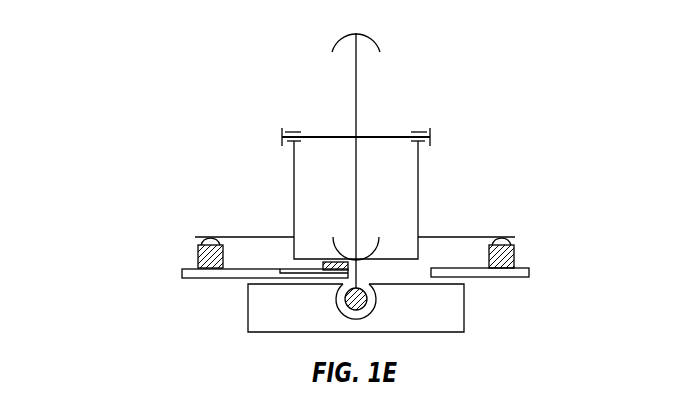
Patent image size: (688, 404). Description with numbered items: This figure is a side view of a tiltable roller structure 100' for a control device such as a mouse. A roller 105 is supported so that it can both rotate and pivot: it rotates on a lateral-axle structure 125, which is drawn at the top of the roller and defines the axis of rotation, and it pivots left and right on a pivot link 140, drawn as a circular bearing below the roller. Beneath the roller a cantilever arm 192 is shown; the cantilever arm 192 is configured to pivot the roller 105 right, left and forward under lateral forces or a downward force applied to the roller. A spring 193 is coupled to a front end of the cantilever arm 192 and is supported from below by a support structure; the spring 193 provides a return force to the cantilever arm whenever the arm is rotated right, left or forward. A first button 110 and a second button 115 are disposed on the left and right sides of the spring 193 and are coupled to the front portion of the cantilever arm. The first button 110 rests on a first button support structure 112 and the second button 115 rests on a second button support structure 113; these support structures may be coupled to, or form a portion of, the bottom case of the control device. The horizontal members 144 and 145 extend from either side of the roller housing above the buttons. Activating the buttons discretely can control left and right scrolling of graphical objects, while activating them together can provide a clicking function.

The roller structure 100' is at (243, 203).
The roller 105 is at (356, 108).
The lateral-axle structure 125 is at (430, 132).
The left arm plate 144 is at (235, 236).
The right arm plate 145 is at (478, 237).
The first button 110 is at (197, 256).
The second button 115 is at (514, 258).
The first button support structure 112 is at (233, 278).
The second button support structure 113 is at (478, 278).
The cantilever arm 192 is at (320, 266).
The spring 193 is at (371, 257).
The pivot link 140 is at (378, 293).